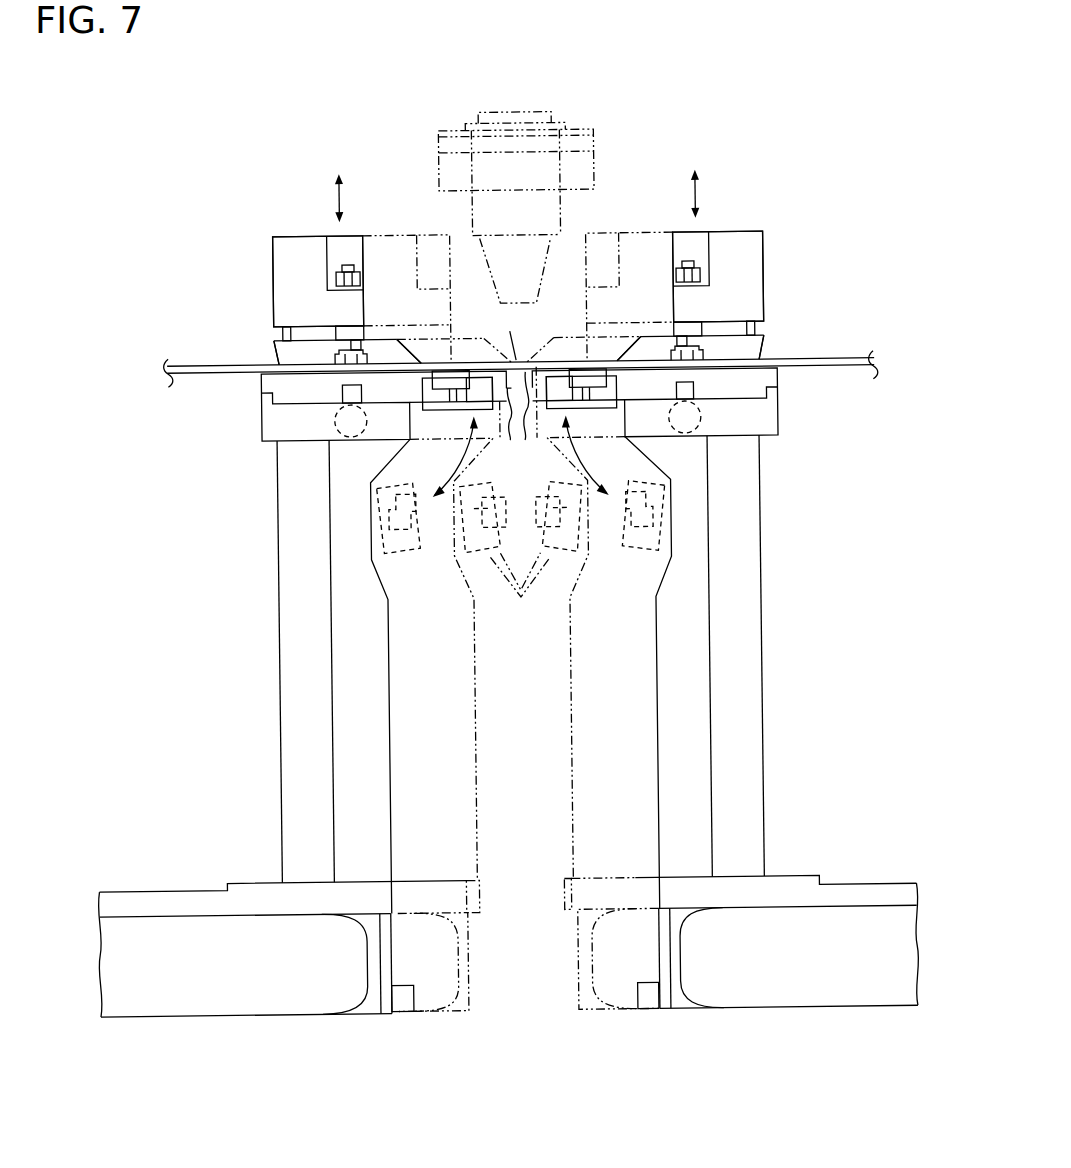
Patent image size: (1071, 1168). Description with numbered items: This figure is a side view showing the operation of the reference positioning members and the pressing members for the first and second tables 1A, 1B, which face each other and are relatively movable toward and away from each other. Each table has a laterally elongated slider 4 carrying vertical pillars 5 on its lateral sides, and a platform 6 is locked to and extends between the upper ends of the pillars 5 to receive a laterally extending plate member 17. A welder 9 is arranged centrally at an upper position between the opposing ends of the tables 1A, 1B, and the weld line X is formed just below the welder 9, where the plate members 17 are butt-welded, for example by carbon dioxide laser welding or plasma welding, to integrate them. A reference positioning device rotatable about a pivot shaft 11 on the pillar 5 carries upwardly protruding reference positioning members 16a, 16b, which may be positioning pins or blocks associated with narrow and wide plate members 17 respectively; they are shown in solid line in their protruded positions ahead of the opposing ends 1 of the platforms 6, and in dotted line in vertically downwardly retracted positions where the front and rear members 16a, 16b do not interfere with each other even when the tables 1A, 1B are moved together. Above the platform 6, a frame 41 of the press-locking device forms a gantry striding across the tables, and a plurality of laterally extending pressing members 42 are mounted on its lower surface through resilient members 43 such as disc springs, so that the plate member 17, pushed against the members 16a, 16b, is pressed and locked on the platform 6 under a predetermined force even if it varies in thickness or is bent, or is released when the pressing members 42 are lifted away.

The welder 9 is at (583, 110).
The plate member 17 is at (176, 362).
The first table 1A is at (262, 214).
The second table 1B is at (793, 229).
The frame 41 is at (300, 234).
The resilient member 43 is at (367, 333).
The pressing member 42 is at (309, 344).
The platform 6 is at (272, 379).
The pivot shaft 11 is at (330, 427).
The opposing end 1 is at (518, 411).
The reference positioning member 16a is at (450, 366).
The reference positioning member 16b is at (381, 518).
The pillar 5 is at (279, 637).
The slider 4 is at (195, 898).